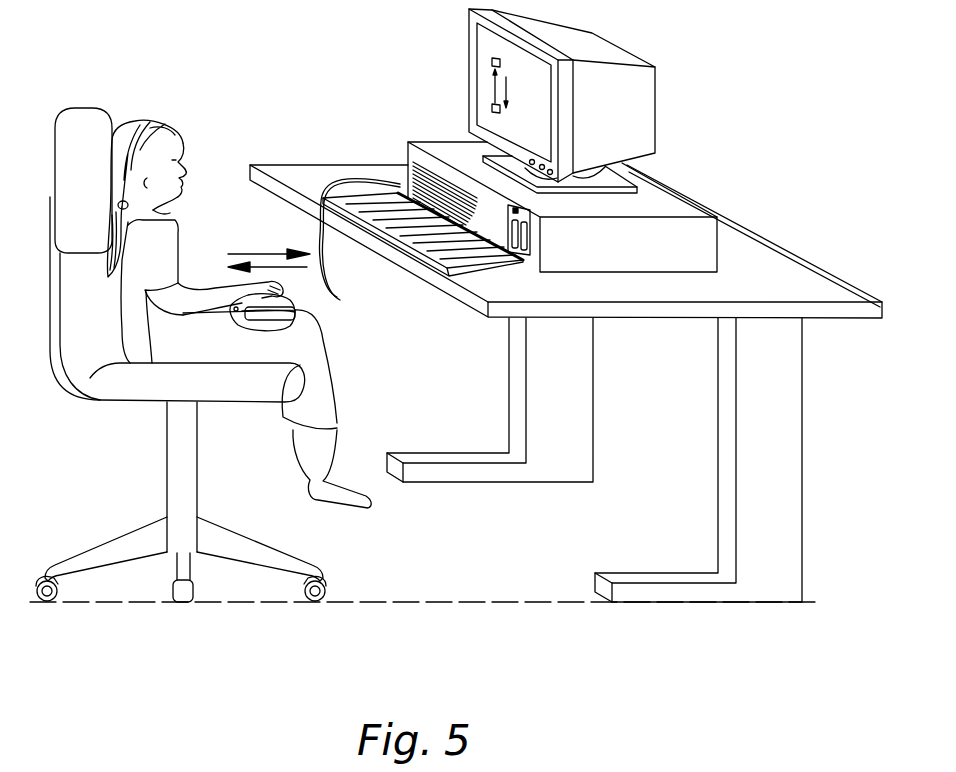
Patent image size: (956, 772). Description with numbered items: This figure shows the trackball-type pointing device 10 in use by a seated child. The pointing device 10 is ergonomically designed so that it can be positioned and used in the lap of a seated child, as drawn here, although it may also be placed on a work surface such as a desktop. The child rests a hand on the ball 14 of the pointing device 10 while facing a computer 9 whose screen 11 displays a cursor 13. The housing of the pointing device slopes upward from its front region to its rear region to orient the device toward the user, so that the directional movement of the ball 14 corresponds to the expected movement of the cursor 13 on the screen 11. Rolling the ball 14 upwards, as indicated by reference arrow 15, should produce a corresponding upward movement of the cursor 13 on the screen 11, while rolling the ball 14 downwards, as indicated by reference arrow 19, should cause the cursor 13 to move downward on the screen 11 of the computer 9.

The computer 9 is at (528, 257).
The pointing device 10 is at (295, 320).
The screen 11 is at (545, 178).
The cursor 13 is at (492, 62).
The ball 14 is at (296, 298).
The reference arrow 15 is at (258, 255).
The reference arrow 19 is at (506, 97).